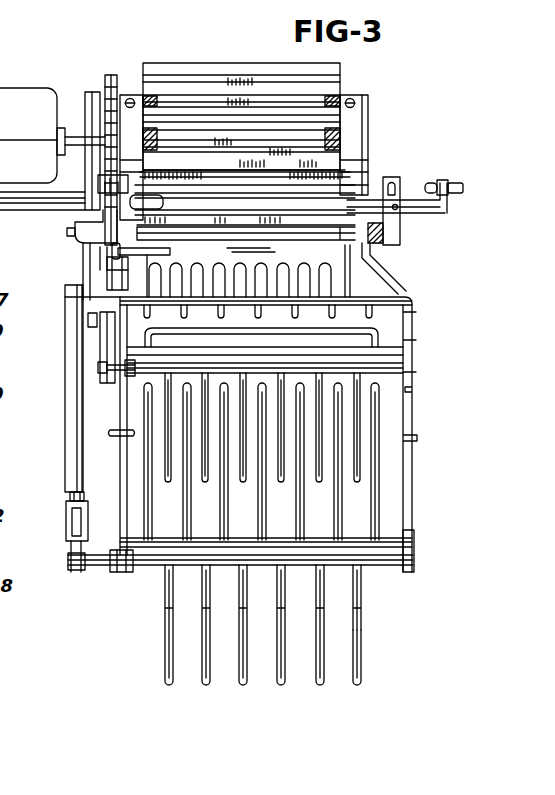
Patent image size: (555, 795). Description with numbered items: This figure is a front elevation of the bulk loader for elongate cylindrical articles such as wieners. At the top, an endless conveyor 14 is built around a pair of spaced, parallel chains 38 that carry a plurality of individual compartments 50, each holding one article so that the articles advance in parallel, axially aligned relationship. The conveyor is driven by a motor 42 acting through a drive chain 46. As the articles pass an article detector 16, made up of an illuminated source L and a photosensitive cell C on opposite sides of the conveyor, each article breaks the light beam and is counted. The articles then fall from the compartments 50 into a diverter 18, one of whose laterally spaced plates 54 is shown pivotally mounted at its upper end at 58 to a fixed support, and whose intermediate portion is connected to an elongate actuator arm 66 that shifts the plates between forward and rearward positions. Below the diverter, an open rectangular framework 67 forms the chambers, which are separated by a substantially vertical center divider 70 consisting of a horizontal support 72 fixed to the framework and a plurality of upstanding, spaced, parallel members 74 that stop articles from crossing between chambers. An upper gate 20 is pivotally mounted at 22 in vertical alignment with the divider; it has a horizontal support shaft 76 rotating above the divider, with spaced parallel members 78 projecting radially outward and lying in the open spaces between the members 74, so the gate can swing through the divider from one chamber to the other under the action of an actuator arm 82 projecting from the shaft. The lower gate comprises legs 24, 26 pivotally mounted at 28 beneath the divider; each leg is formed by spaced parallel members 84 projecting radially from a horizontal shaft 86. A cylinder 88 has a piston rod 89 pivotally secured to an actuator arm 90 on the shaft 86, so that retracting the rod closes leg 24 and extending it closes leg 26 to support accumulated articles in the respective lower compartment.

The endless conveyor 14 is at (204, 58).
The motor 42 is at (38, 102).
The drive chain 46 is at (107, 87).
The chains 38 is at (143, 93).
The compartments 50 is at (237, 168).
The photosensitive cell C is at (178, 166).
The illuminated source L is at (432, 185).
The article detector 16 is at (445, 180).
The pivotal mounting 58 is at (398, 236).
The actuator arm 66 is at (105, 258).
The diverter 18 is at (362, 278).
The diverter plate 54 is at (356, 289).
The framework 67 is at (413, 310).
The cylinder 88 is at (72, 362).
The support shaft 76 is at (390, 370).
The upper gate mounting 22 is at (376, 378).
The upper gate 20 is at (284, 430).
The actuator arm 82 is at (103, 375).
The gate members 78 is at (358, 403).
The center divider 70 is at (383, 470).
The divider members 74 is at (375, 517).
The horizontal support 72 is at (383, 540).
The piston rod 89 is at (72, 493).
The actuator arm 90 is at (78, 547).
The lower gate mounting 28 is at (415, 560).
The shaft 86 is at (160, 562).
The leg 24 is at (367, 588).
The leg 26 is at (365, 655).
The leg members 84 is at (206, 628).